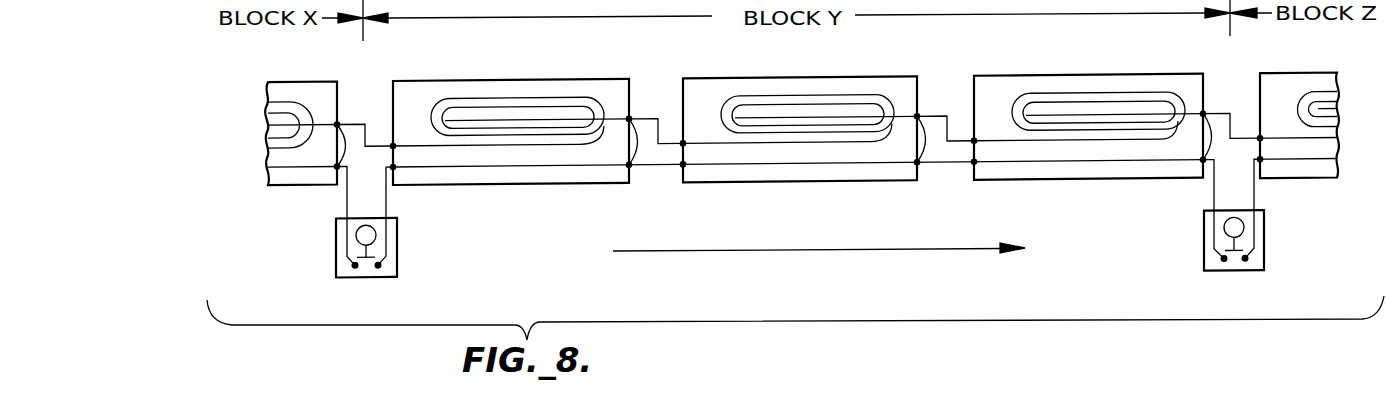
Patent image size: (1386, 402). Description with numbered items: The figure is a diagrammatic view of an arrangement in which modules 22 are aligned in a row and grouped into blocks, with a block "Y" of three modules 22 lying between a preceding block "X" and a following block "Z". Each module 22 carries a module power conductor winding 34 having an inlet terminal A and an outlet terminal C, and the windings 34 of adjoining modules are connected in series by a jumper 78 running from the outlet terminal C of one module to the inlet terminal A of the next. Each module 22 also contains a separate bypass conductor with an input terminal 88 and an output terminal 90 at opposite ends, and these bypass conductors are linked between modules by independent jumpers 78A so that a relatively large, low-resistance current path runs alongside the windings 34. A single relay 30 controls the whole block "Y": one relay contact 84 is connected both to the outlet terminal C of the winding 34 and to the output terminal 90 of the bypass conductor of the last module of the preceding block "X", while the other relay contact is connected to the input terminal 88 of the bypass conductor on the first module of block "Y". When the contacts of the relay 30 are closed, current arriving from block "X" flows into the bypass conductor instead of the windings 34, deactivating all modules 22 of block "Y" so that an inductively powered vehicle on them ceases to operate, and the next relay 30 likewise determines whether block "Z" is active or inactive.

The heater module block 22 is at (447, 79).
The module power conductor winding 34 is at (520, 99).
The jumper 78 is at (947, 122).
The independent jumper 78A is at (641, 168).
The input terminal 88 is at (395, 170).
The output terminal 90 is at (336, 170).
The relay 30 is at (398, 247).
The relay contact 84 is at (354, 268).
The inlet terminal A is at (398, 145).
The outlet terminal C is at (631, 119).